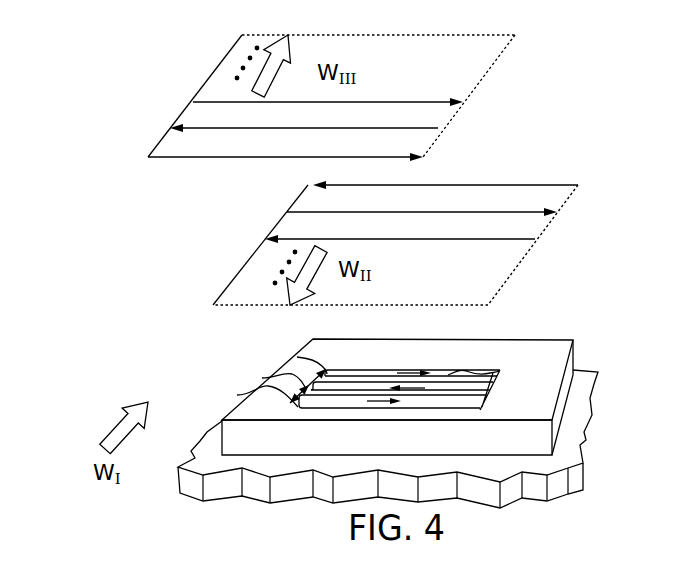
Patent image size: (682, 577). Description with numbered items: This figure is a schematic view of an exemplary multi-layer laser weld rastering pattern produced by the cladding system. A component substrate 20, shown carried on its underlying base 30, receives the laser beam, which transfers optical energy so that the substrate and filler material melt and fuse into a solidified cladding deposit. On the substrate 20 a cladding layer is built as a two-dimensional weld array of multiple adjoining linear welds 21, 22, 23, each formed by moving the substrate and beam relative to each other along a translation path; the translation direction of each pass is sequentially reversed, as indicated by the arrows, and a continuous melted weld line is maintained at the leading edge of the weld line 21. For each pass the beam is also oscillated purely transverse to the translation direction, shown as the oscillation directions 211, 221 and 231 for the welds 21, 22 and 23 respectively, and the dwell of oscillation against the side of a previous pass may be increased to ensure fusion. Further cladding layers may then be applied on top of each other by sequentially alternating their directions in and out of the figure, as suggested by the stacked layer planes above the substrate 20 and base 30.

The substrate 20 is at (608, 326).
The linear weld 21 is at (420, 402).
The linear weld 22 is at (484, 386).
The linear weld 23 is at (490, 376).
The oscillation direction 211 is at (237, 395).
The oscillation direction 221 is at (262, 378).
The oscillation direction 231 is at (297, 357).
The substrate 30 is at (195, 484).